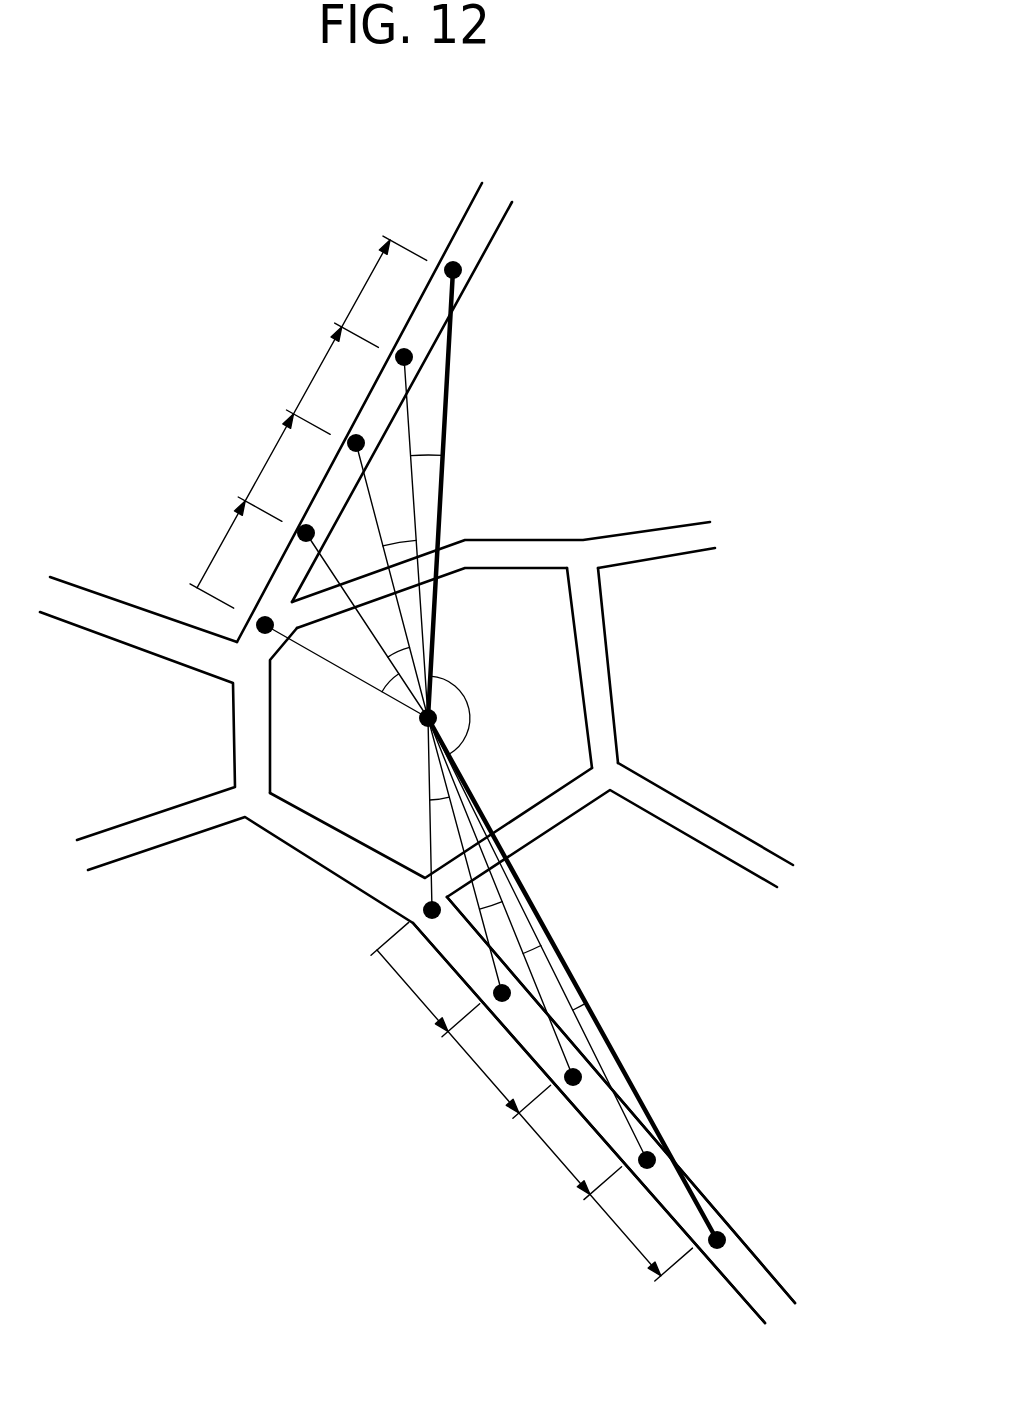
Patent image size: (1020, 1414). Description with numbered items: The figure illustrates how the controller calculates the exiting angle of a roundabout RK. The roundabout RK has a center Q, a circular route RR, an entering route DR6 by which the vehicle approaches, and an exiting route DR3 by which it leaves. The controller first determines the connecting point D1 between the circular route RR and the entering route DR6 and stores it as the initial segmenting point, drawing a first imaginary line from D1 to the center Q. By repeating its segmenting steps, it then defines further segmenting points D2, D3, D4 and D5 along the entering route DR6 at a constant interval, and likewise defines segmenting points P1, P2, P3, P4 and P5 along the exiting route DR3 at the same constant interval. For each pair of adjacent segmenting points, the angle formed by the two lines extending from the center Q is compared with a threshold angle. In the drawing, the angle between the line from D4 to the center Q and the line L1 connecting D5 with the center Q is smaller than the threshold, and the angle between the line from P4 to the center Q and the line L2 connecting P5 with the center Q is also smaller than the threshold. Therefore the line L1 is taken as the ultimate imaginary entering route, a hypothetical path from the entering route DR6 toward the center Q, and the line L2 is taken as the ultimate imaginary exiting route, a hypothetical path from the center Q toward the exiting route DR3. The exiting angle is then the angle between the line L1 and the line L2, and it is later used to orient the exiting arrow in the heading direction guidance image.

The exiting route DR3 is at (468, 213).
The entering route DR6 is at (773, 1280).
The circular route RR is at (552, 550).
The roundabout RK is at (638, 682).
The line connecting division point D5 with center Q L1 is at (637, 1083).
The line connecting division point P5 with center Q L2 is at (445, 425).
The center of the roundabout Q is at (415, 729).
The segmenting point P1 is at (274, 611).
The segmenting point P2 is at (318, 520).
The segmenting point P3 is at (368, 430).
The division point P4 is at (417, 344).
The division point P5 is at (464, 257).
The connecting point D1 is at (417, 900).
The segmenting point D2 is at (518, 1006).
The segmenting point D3 is at (589, 1090).
The division point D4 is at (663, 1174).
The division point D5 is at (734, 1254).